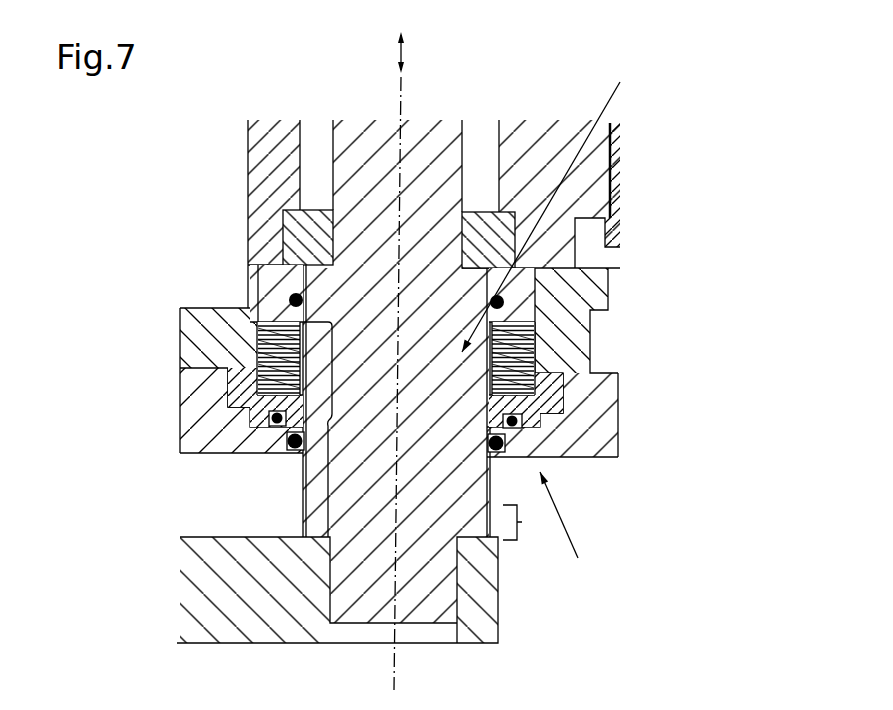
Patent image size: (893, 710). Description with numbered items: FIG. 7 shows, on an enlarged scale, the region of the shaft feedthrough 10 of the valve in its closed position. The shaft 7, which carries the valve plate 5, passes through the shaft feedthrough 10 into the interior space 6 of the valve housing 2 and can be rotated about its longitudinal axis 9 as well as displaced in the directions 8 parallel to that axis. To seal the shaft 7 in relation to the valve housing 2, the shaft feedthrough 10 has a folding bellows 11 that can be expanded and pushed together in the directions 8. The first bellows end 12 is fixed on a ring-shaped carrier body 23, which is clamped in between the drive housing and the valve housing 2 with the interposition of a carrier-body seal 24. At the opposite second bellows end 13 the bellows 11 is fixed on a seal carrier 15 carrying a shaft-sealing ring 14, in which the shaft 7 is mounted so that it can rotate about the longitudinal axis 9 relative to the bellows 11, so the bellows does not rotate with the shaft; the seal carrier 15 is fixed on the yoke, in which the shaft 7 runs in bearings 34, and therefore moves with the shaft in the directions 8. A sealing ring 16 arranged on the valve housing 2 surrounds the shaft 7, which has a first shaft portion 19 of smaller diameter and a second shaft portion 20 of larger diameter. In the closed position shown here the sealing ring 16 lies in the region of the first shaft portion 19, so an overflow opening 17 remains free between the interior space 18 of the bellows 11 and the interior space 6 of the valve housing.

The valve housing 2 is at (612, 447).
The valve plate 5 is at (188, 637).
The interior space of the valve housing 6 is at (566, 527).
The shaft 7 is at (353, 172).
The directions 8 is at (632, 709).
The longitudinal axis 9 is at (402, 95).
The shaft feedthrough 10 is at (615, 237).
The bellows 11 is at (333, 418).
The first bellows end 12 is at (548, 452).
The second bellows end 13 is at (533, 320).
The shaft-sealing ring 14 is at (493, 293).
The seal carrier 15 is at (551, 204).
The sealing ring 16 is at (360, 452).
The overflow opening 17 is at (488, 441).
The interior space of the bellows 18 is at (575, 335).
The first shaft portion 19 is at (545, 362).
The second shaft portion 20 is at (529, 522).
The carrier body 23 is at (517, 421).
The carrier-body seal 24 is at (497, 450).
The bearings 34 is at (463, 210).